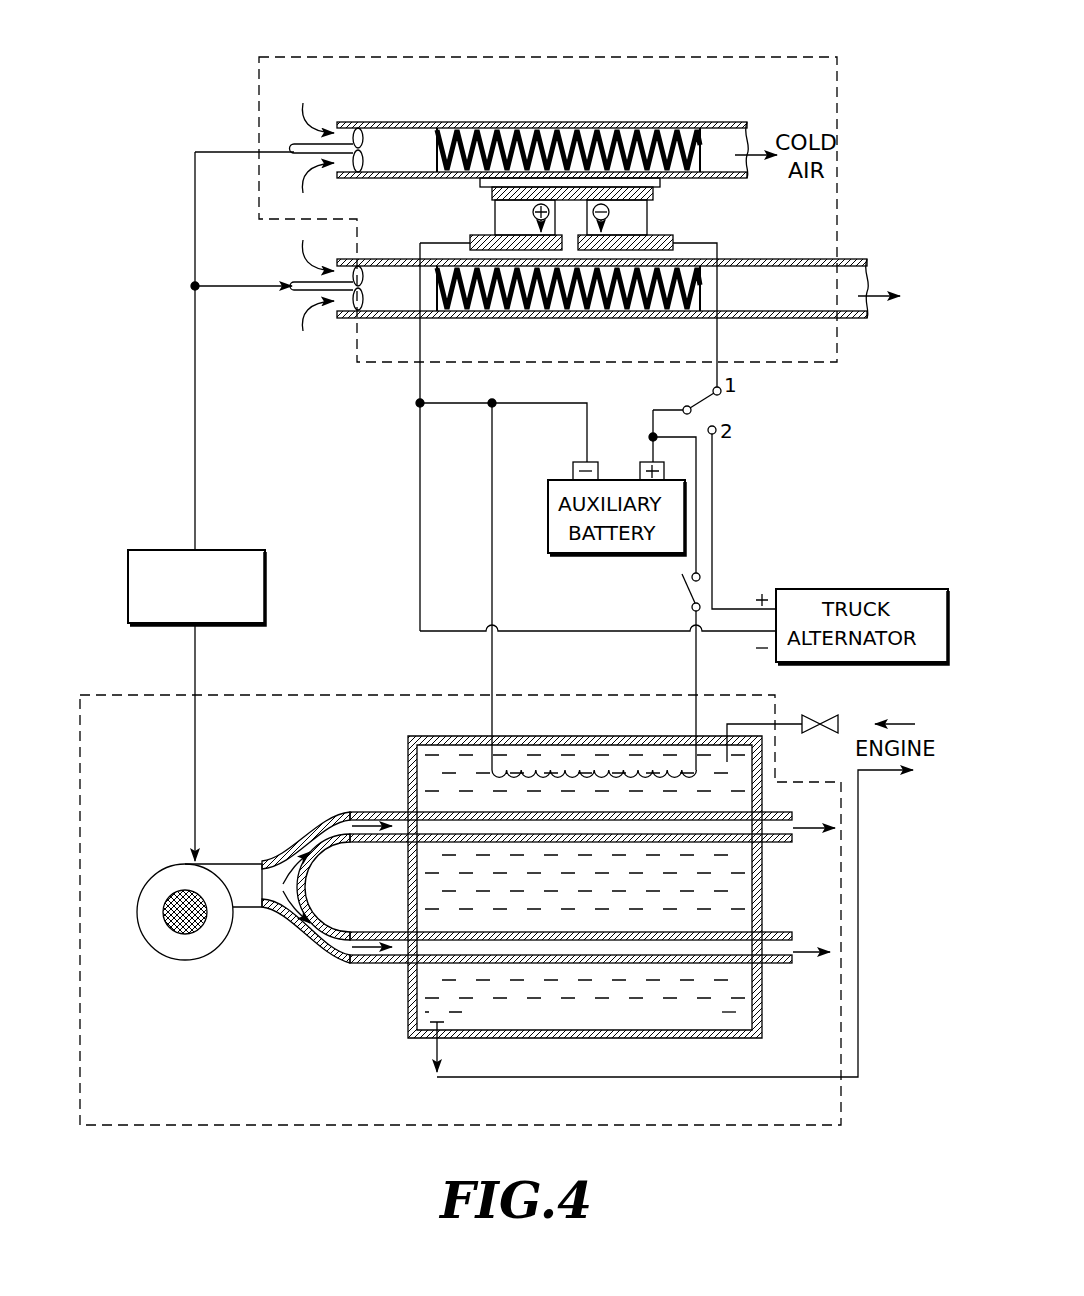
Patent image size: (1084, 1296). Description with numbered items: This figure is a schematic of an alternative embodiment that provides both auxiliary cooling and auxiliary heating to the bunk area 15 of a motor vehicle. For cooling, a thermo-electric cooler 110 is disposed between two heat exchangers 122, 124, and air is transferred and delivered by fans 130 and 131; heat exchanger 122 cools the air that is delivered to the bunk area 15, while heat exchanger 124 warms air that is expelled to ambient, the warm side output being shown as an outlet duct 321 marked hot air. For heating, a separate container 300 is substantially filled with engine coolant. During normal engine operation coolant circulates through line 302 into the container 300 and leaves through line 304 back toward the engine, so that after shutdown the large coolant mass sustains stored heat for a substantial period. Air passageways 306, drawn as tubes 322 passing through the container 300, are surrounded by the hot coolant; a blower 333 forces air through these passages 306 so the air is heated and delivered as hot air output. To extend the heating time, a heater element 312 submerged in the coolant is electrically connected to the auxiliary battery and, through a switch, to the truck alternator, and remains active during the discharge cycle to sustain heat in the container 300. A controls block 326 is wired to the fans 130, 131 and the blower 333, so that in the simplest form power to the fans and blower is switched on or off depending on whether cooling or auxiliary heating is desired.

The bunk area 15 is at (621, 55).
The heat exchanger 122 is at (565, 122).
The fan 131 is at (363, 134).
The thermo-electric cooler 110 is at (657, 217).
The hot air outlet duct 321 is at (858, 280).
The fan 130 is at (361, 270).
The heat exchanger 124 is at (512, 318).
The controls 326 is at (240, 550).
The heater element 312 is at (564, 762).
The line 302 is at (788, 722).
The air passageways 306 is at (805, 812).
The line 304 is at (859, 832).
The heat exchange tube 322 is at (826, 838).
The blower 333 is at (192, 961).
The container 300 is at (631, 1043).